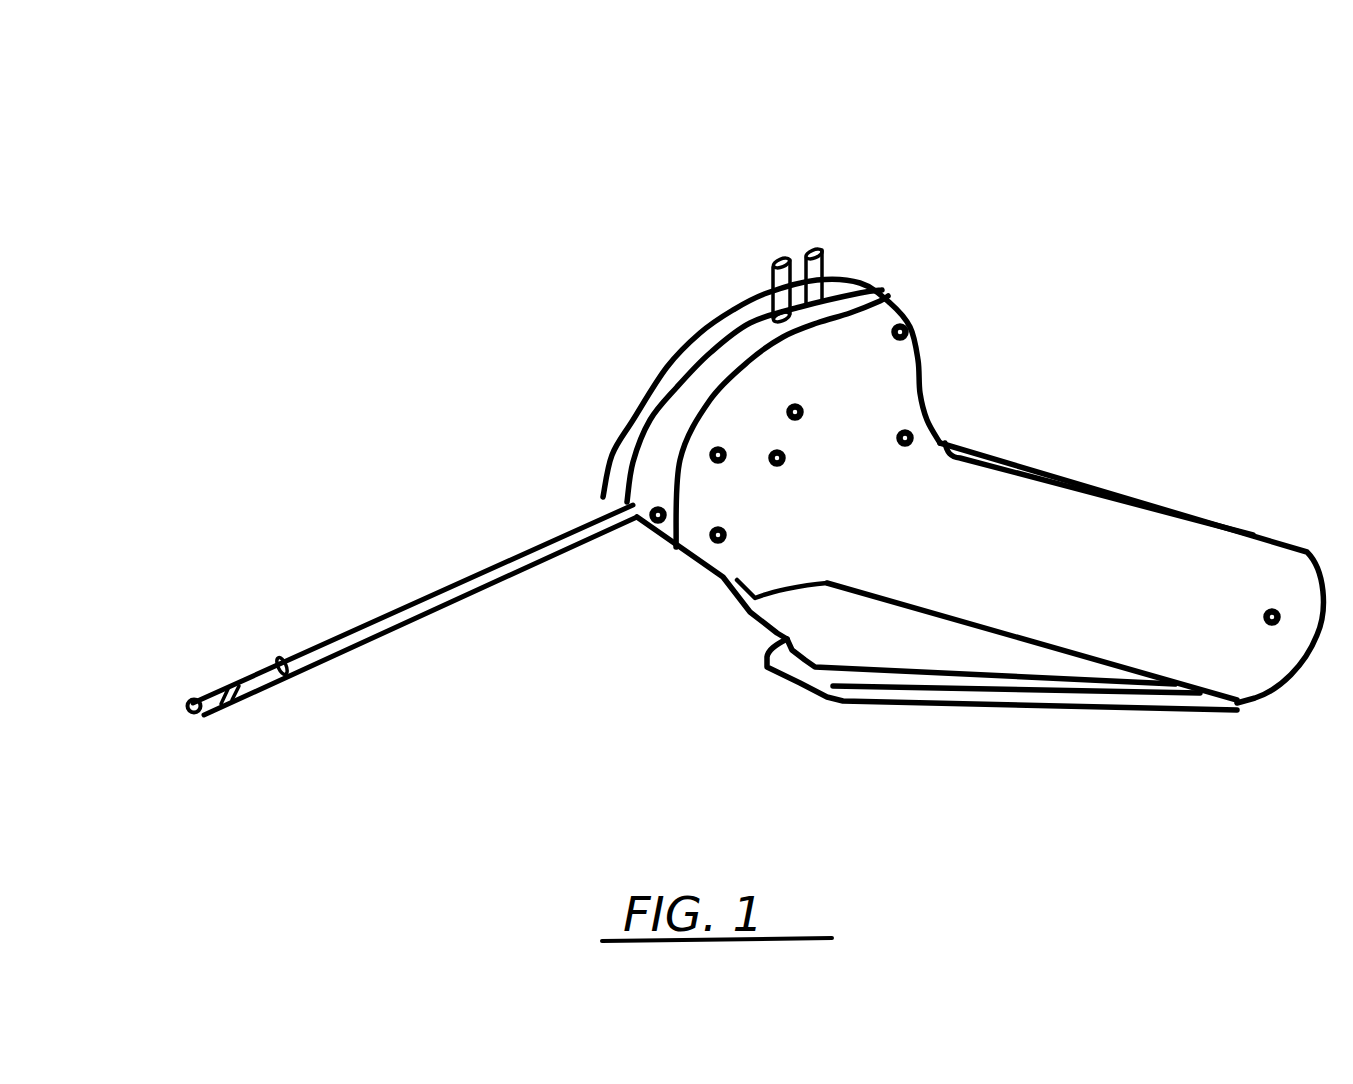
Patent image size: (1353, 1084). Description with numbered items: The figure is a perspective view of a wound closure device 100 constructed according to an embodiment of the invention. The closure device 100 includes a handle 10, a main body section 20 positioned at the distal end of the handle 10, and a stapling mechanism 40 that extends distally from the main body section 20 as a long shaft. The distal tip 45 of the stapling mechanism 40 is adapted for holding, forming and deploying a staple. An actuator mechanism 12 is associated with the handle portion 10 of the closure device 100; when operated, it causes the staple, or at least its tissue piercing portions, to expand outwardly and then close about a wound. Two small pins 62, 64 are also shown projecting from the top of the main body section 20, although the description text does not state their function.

The wound closure device 100 is at (1149, 230).
The handle 10 is at (1164, 488).
The actuator mechanism 12 is at (950, 703).
The main body section 20 is at (876, 287).
The stapling mechanism 40 is at (378, 604).
The distal tip 45 is at (178, 699).
The first pin 62 is at (770, 283).
The second pin 64 is at (827, 262).